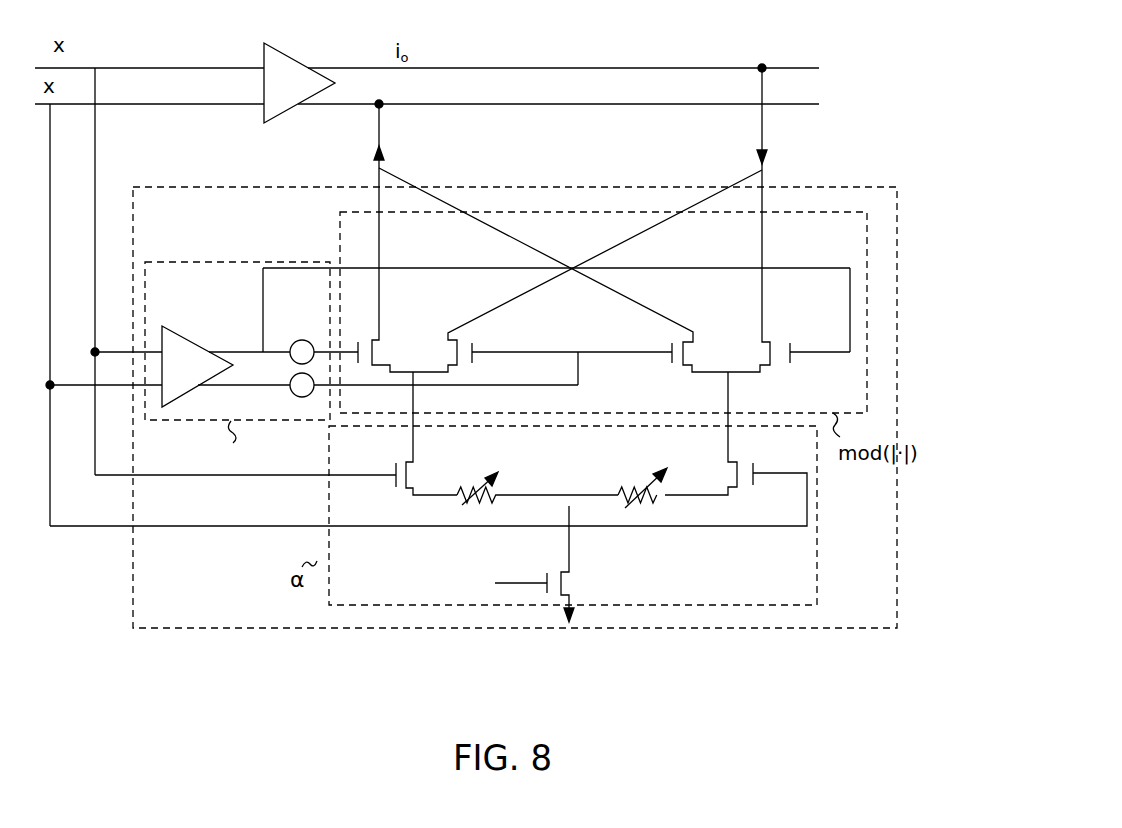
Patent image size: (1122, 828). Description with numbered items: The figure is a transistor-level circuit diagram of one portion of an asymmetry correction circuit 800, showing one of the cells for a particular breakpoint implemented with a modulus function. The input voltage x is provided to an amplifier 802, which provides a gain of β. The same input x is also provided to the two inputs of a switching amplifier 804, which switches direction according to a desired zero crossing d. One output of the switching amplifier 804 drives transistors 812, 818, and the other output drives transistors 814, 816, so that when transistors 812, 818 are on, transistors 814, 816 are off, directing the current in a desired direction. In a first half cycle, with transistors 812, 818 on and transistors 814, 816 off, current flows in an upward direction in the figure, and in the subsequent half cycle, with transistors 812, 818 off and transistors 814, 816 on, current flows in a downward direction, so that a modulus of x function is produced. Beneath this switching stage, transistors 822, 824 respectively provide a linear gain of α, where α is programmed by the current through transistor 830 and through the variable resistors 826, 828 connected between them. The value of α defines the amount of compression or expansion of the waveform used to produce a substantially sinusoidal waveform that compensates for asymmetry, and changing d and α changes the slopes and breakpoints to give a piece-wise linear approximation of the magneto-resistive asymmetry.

The asymmetry correction circuit portion 800 is at (953, 547).
The amplifier 802 is at (240, 53).
The switching amplifier 804 is at (186, 322).
The transistor 812 is at (385, 353).
The transistor 814 is at (482, 350).
The transistor 816 is at (666, 346).
The transistor 818 is at (796, 349).
The transistor 822 is at (388, 465).
The transistor 824 is at (760, 467).
The variable resistor 826 is at (492, 458).
The variable resistor 828 is at (645, 467).
The transistor 830 is at (542, 581).